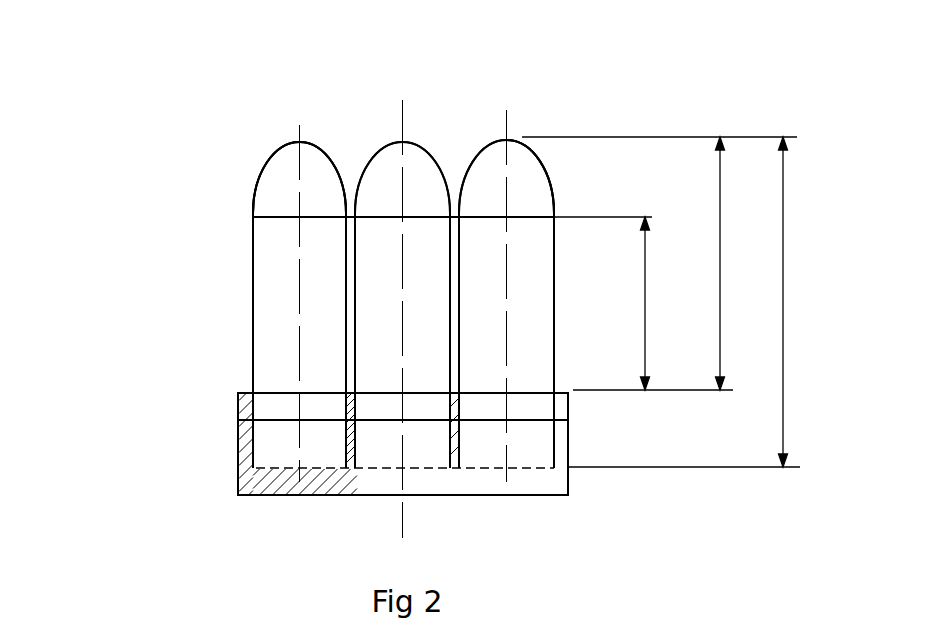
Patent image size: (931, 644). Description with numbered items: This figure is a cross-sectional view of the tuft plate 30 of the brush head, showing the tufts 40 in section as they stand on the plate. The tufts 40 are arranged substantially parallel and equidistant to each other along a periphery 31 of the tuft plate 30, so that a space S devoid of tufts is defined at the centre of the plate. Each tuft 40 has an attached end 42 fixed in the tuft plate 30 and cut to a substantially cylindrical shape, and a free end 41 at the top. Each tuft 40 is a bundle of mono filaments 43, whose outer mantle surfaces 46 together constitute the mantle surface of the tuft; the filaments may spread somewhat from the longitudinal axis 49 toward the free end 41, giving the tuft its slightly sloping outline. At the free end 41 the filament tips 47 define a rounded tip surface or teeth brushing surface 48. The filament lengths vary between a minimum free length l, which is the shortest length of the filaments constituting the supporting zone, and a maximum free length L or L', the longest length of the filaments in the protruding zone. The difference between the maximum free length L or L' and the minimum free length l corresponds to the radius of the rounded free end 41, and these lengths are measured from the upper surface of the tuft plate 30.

The tuft plate 30 is at (388, 477).
The periphery 31 is at (222, 441).
The tuft 40 is at (275, 358).
The free end 41 is at (478, 133).
The attached end 42 is at (565, 379).
The mono filaments 43 is at (239, 305).
The mantle surface 46 is at (250, 297).
The tip 47 is at (549, 156).
The tip surface 48 is at (427, 140).
The longitudinal axis 49 is at (294, 126).
The space S is at (457, 378).
The minimum free length l is at (655, 303).
The maximum free length L is at (733, 263).
The maximum free length L' is at (800, 302).